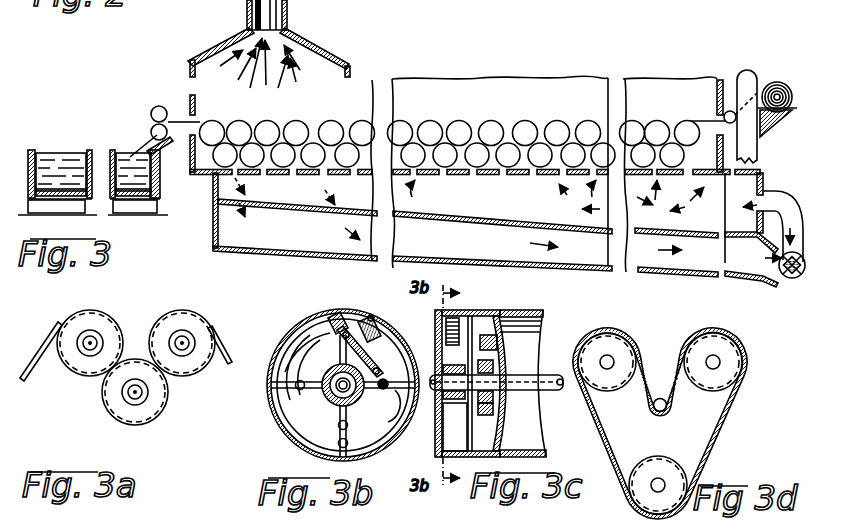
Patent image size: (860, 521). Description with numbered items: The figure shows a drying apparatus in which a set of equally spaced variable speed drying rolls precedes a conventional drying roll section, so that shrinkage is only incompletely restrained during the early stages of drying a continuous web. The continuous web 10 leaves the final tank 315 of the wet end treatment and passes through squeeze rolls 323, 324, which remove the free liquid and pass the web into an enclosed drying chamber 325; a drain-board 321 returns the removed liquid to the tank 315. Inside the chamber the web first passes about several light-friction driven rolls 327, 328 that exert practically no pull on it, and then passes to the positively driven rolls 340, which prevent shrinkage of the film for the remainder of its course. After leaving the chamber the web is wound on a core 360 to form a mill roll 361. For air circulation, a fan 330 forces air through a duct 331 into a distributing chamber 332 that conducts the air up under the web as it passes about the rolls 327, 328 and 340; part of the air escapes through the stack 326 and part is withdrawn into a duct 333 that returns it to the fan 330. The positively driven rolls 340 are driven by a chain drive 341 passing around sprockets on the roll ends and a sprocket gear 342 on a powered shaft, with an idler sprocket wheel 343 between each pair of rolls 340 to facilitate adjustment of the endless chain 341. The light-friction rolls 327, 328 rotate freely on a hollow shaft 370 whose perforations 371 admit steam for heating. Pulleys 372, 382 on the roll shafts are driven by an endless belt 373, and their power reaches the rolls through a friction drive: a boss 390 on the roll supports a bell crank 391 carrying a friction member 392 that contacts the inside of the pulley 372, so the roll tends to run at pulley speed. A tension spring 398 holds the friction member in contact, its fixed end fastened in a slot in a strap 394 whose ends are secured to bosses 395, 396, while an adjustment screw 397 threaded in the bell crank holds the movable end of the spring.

In FIG. 3, the continuous web 10 is at (141, 142).
In FIG. 3, the final tank 315 is at (40, 152).
In FIG. 3, the drain-board 321 is at (167, 152).
In FIG. 3, the squeeze roll 323 is at (156, 106).
In FIG. 3, the squeeze roll 324 is at (152, 128).
In FIG. 3, the enclosed drying chamber 325 is at (190, 63).
In FIG. 3, the stack 326 is at (289, 11).
In FIG. 3, the light-friction driven roll 327 is at (314, 167).
In FIG. 3C, the light-friction driven roll 327 is at (510, 312).
In FIG. 3, the light-friction driven roll 328 is at (361, 124).
In FIG. 3, the fan 330 is at (786, 279).
In FIG. 3, the duct 331 is at (784, 196).
In FIG. 3, the distributing chamber 332 is at (522, 200).
In FIG. 3, the duct 333 is at (332, 240).
In FIG. 3, the positively driven roll 340 is at (589, 122).
In FIG. 3D, the positively driven roll 340 is at (712, 348).
In FIG. 3D, the chain drive 341 is at (718, 433).
In FIG. 3D, the sprocket gear 342 is at (671, 478).
In FIG. 3D, the idler sprocket wheel 343 is at (656, 410).
In FIG. 3, the core 360 is at (760, 73).
In FIG. 3, the mill roll 361 is at (787, 123).
In FIG. 3C, the shaft 370 is at (559, 384).
In FIG. 3C, the perforations 371 is at (543, 377).
In FIG. 3A, the pulley 372 is at (115, 395).
In FIG. 3C, the pulley 372 is at (440, 423).
In FIG. 3A, the endless belt 373 is at (35, 348).
In FIG. 3A, the pulley 382 is at (98, 328).
In FIG. 3C, the boss 390 is at (517, 334).
In FIG. 3B, the bell crank 391 is at (336, 315).
In FIG. 3B, the friction member 392 is at (374, 320).
In FIG. 3C, the friction member 392 is at (456, 312).
In FIG. 3B, the strap 394 is at (383, 389).
In FIG. 3B, the boss 395 is at (364, 348).
In FIG. 3B, the boss 396 is at (378, 411).
In FIG. 3B, the adjustment screw 397 is at (327, 328).
In FIG. 3B, the tension spring 398 is at (292, 338).